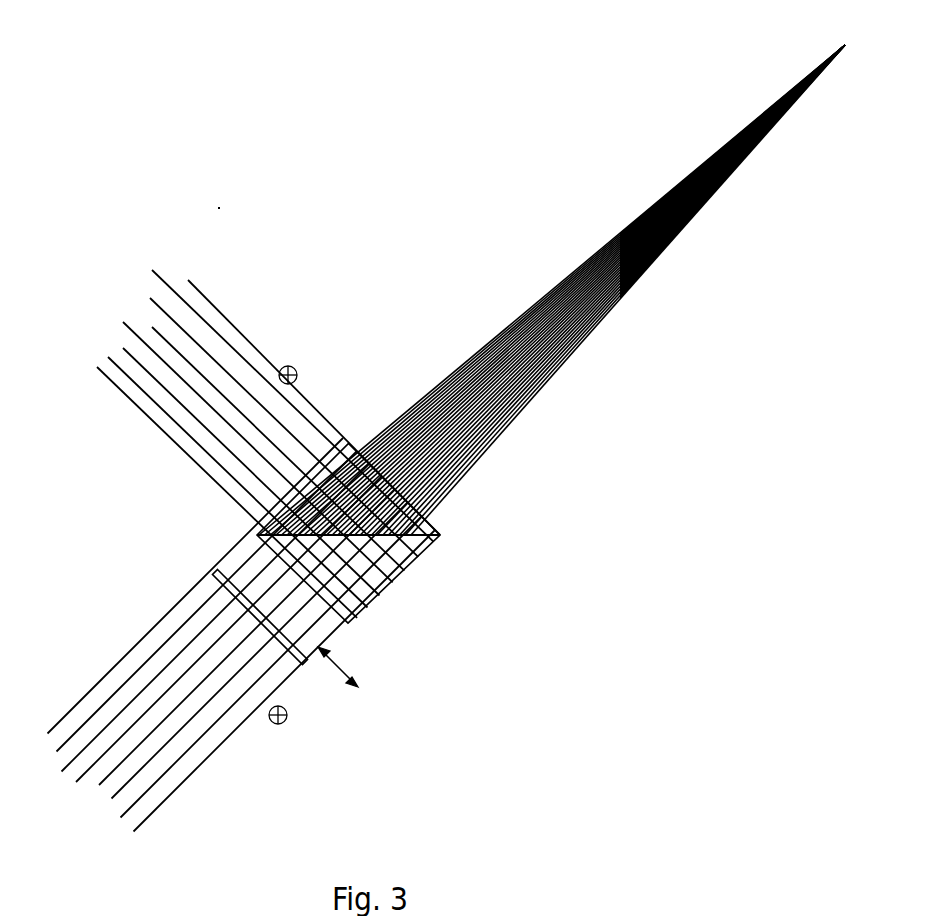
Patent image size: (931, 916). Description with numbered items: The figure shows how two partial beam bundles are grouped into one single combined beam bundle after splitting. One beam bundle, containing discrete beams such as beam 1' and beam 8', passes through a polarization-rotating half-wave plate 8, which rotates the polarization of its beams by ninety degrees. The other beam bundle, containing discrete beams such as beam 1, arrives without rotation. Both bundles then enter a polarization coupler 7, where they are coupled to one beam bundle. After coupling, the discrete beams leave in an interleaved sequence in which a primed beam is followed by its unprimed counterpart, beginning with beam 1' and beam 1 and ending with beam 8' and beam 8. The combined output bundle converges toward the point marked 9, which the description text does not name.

The discrete beam 1 is at (268, 444).
The discrete beam 1' is at (242, 635).
The polarization coupler 7 is at (350, 452).
The polarization-rotating half-wave plate 8 is at (227, 534).
The discrete beam 8' is at (170, 792).
The focal point of output beam 9 is at (578, 285).